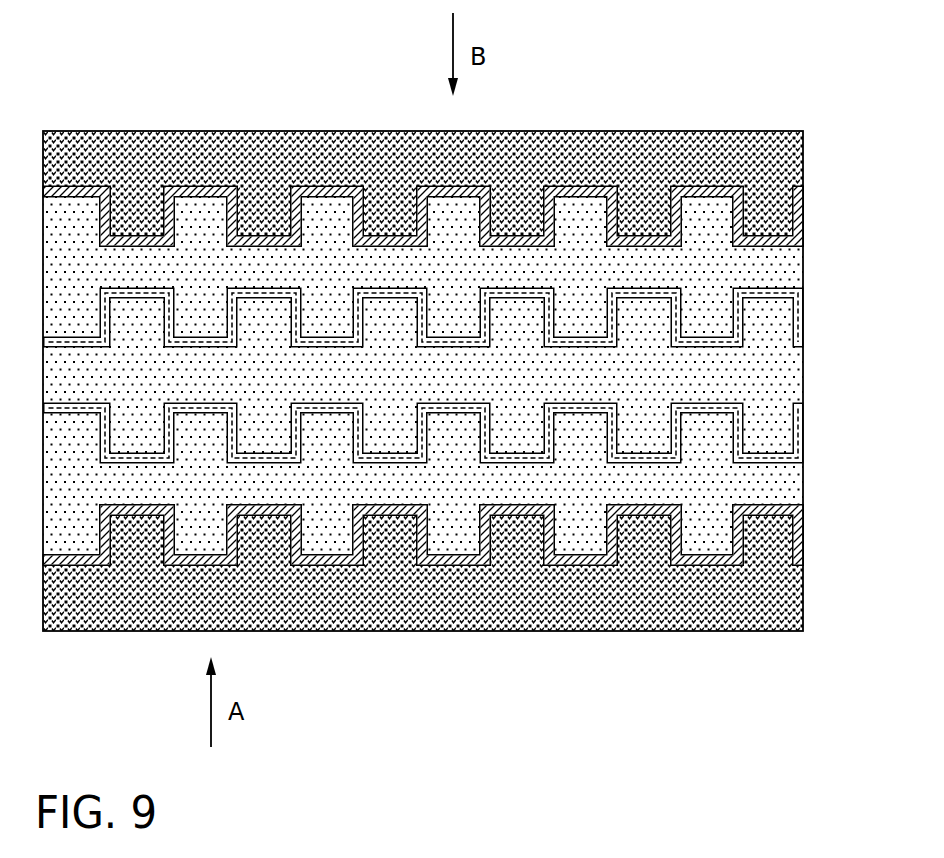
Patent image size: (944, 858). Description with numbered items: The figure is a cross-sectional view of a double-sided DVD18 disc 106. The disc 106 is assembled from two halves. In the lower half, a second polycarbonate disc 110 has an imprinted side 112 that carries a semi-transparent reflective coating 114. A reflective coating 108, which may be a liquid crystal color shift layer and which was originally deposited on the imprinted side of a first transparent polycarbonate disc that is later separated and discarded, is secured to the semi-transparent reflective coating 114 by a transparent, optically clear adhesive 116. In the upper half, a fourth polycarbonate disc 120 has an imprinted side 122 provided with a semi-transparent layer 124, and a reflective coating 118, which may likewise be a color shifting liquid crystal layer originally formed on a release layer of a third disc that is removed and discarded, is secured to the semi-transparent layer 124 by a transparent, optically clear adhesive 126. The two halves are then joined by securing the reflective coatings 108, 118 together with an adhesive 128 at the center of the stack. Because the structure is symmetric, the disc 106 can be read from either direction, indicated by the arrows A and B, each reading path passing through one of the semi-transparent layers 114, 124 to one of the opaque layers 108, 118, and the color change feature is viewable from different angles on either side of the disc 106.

The DVD18 disc 106 is at (530, 647).
The reflective coating 108 is at (773, 452).
The second polycarbonate disc 110 is at (423, 597).
The imprinted side 112 is at (193, 531).
The semi-transparent reflective coating 114 is at (757, 503).
The transparent optically clear adhesive 116 is at (353, 498).
The reflective coating 118 is at (760, 300).
The fourth polycarbonate disc 120 is at (353, 175).
The imprinted side 122 is at (683, 197).
The semi-transparent layer 124 is at (757, 247).
The transparent optically clear adhesive 126 is at (353, 285).
The adhesive 128 is at (353, 391).